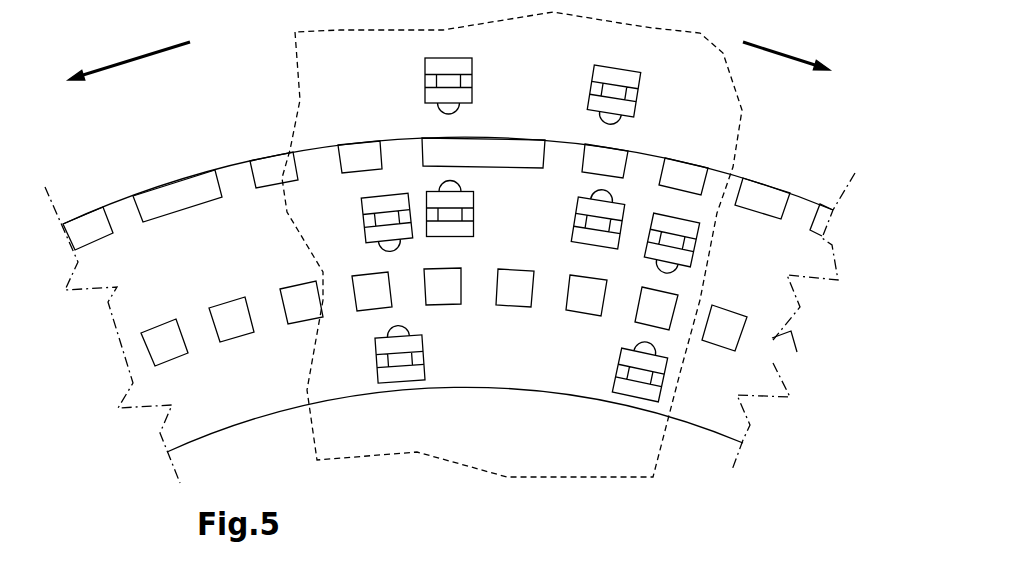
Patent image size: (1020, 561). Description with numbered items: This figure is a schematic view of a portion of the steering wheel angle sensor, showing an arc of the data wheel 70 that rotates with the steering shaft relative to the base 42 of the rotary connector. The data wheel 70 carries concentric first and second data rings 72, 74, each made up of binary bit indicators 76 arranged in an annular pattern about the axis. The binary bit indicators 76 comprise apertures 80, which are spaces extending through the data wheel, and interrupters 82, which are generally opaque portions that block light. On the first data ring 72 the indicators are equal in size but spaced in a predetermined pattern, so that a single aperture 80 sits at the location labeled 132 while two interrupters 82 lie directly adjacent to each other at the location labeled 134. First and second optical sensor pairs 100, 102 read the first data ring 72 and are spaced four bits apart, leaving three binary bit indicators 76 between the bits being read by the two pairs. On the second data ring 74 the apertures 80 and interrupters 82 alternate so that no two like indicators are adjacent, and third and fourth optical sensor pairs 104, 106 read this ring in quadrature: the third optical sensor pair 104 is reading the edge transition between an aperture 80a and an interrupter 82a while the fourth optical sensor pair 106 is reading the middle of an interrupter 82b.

The base 42 is at (637, 30).
The data wheel 70 is at (143, 298).
The first data ring 72 is at (855, 242).
The second data ring 74 is at (818, 363).
The binary bit indicators 76 is at (810, 218).
The apertures 80 is at (342, 292).
The aperture 80a is at (440, 293).
The interrupters 82 is at (298, 293).
The interrupter 82a is at (407, 283).
The interrupter 82b is at (653, 305).
The first optical sensor pair 100 is at (433, 203).
The second optical sensor pair 102 is at (618, 206).
The third optical sensor pair 104 is at (375, 242).
The fourth optical sensor pair 106 is at (667, 268).
The location of a single aperture 132 is at (307, 162).
The location of two adjacent interrupters 134 is at (173, 195).